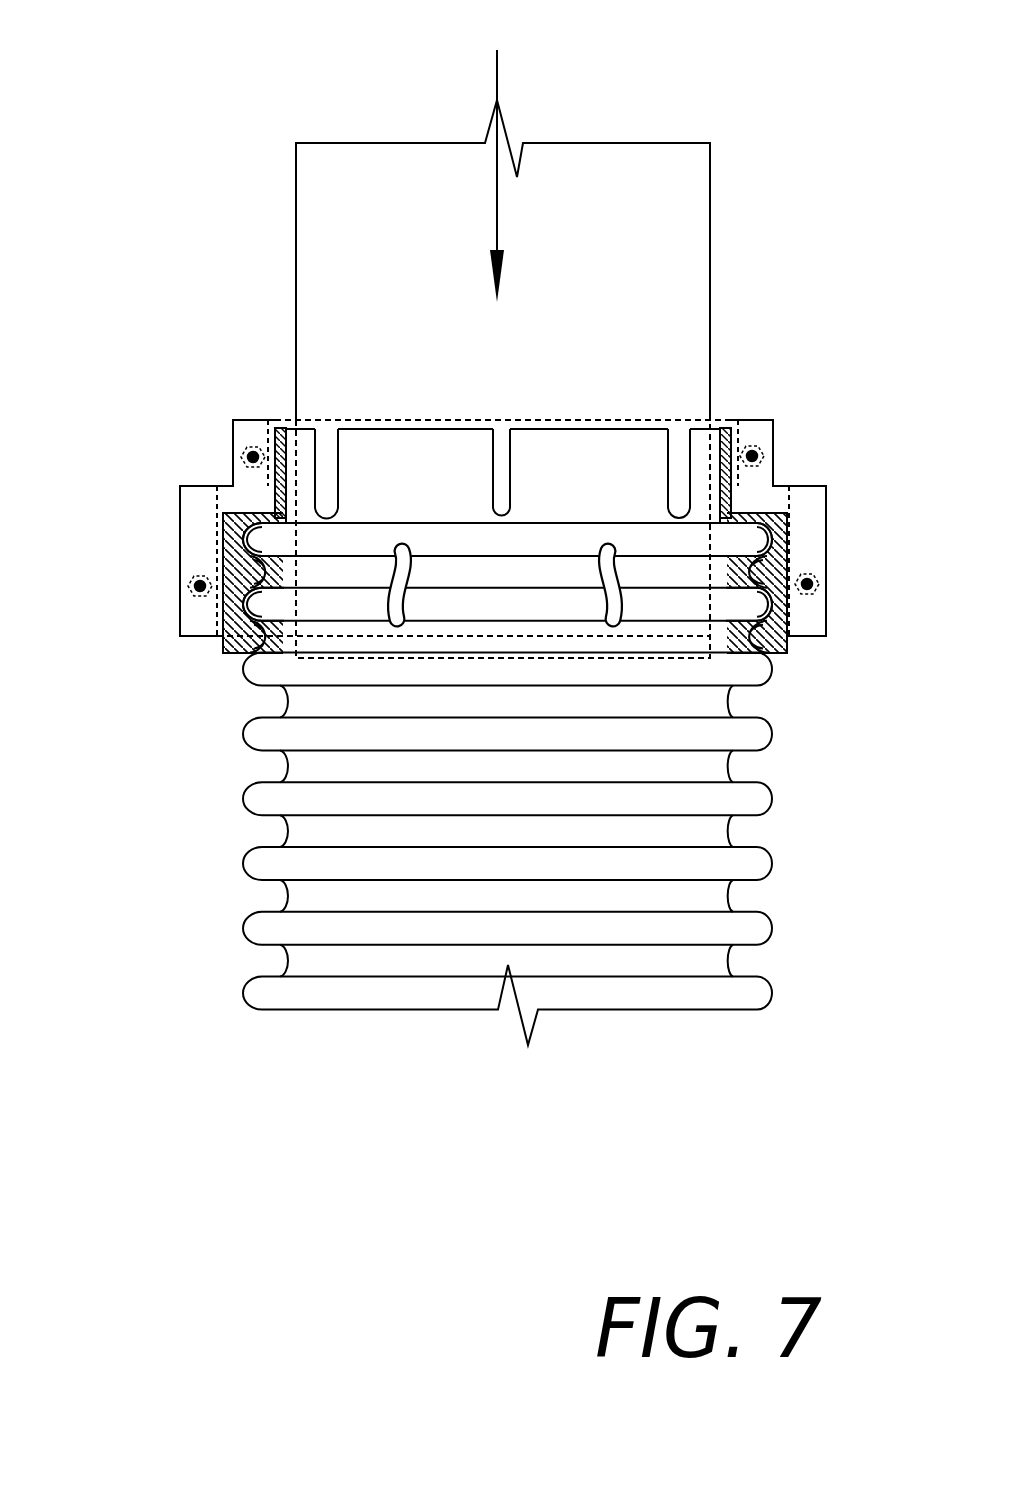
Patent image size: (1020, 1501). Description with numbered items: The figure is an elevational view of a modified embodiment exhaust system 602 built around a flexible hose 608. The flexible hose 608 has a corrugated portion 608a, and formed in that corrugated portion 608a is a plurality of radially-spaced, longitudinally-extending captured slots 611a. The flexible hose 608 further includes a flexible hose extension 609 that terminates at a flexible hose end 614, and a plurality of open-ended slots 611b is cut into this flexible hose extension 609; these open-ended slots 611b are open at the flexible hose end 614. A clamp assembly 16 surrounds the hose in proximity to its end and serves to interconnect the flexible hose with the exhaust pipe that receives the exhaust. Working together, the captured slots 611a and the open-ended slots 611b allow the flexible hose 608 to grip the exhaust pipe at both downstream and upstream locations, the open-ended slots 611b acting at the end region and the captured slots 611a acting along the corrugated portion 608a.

The exhaust system 602 is at (188, 304).
The clamp assembly 16 is at (784, 423).
The flexible hose extension 609 is at (447, 492).
The open-ended slots 611b is at (674, 434).
The flexible hose end 614 is at (432, 430).
The captured slots 611a is at (597, 562).
The flexible hose 608 is at (765, 1008).
The corrugated portion 608a is at (764, 878).